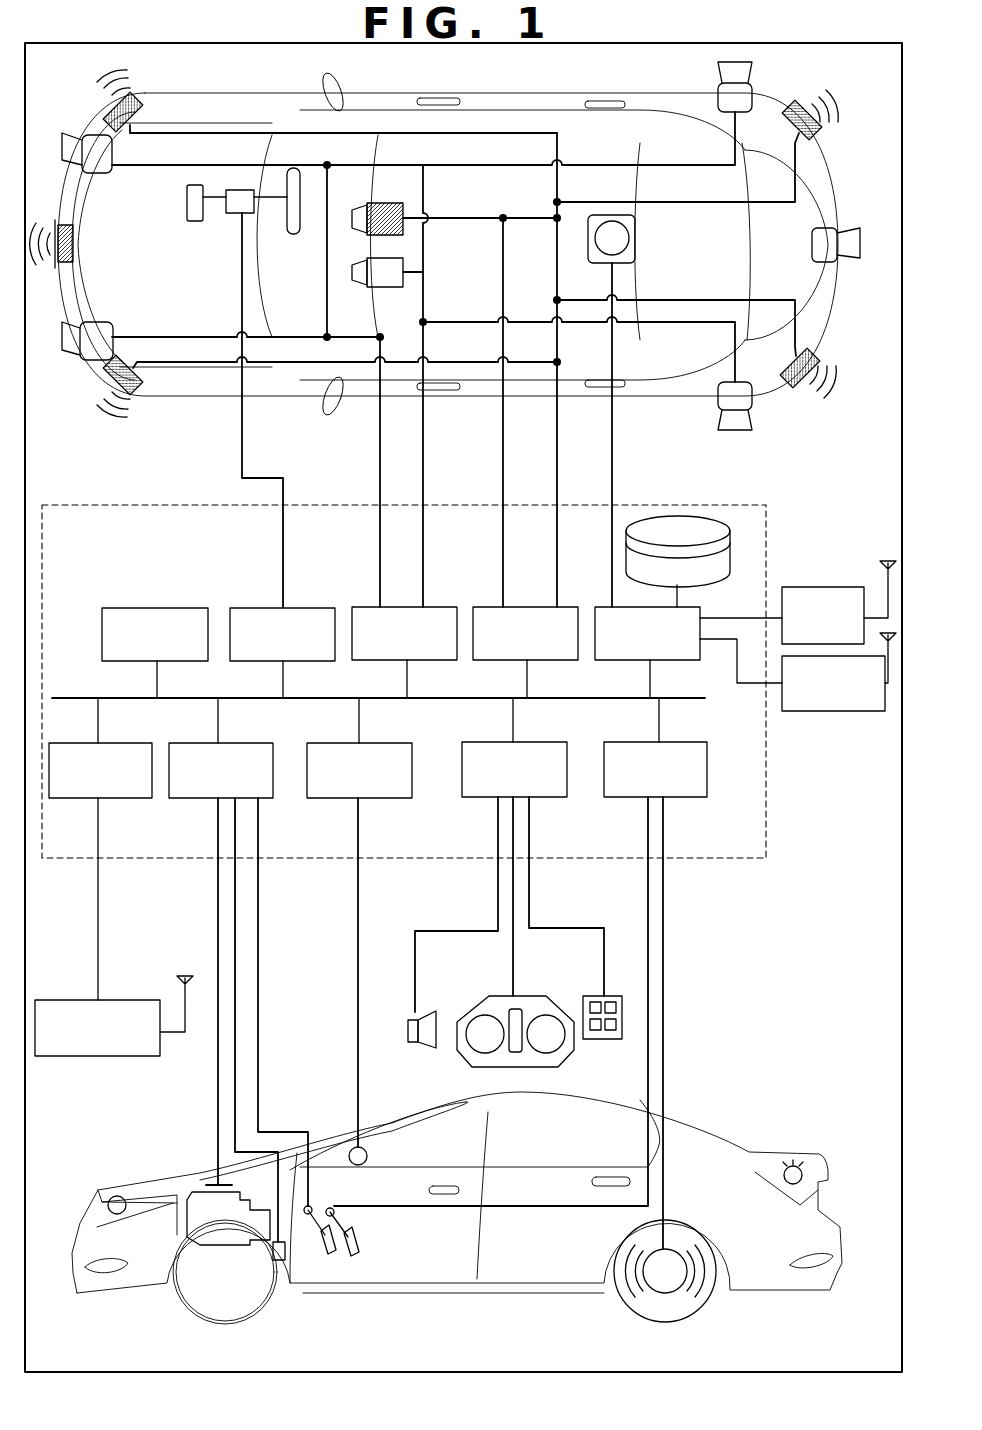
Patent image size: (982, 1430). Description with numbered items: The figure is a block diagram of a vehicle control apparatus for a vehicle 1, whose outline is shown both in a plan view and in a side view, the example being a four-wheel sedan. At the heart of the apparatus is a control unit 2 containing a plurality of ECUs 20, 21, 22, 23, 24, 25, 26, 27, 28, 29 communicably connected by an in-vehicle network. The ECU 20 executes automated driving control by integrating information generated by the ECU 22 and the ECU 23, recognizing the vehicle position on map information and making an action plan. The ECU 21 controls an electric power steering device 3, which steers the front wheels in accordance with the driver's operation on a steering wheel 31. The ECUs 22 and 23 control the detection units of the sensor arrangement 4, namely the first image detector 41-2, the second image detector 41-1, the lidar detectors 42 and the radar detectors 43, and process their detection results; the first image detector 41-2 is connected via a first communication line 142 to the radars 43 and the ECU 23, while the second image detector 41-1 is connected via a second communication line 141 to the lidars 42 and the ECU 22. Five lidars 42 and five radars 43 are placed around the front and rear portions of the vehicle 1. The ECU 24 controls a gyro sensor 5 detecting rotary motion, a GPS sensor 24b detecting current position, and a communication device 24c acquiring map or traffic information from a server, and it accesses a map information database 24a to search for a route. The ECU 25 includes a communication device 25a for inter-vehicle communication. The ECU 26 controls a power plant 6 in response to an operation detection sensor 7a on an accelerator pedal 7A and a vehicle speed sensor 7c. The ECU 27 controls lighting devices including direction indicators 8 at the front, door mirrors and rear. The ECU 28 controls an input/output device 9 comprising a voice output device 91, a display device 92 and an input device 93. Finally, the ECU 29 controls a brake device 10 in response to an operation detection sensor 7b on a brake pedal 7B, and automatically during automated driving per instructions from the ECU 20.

The vehicle 1 is at (842, 152).
The control unit 2 is at (745, 858).
The electric power steering device 3 is at (195, 221).
The steering wheel 31 is at (293, 234).
The sensor group 4 is at (84, 98).
The second image detector 41-1 is at (403, 287).
The first image detector 41-2 is at (403, 235).
The lidar detector 42 is at (110, 176).
The radar detector 43 is at (133, 102).
The gyro sensor 5 is at (635, 240).
The second communication line 141 is at (426, 185).
The first communication line 142 is at (557, 202).
The ECU 20 is at (188, 608).
The ECU 21 is at (310, 608).
The ECU 22 is at (399, 607).
The ECU 23 is at (530, 607).
The ECU 24 is at (596, 607).
The map information database 24a is at (676, 516).
The GPS sensor 24b is at (841, 587).
The communication device 24c is at (830, 711).
The ECU 25 is at (134, 798).
The communication device 25a is at (100, 1056).
The ECU 26 is at (202, 798).
The ECU 27 is at (392, 798).
The ECU 28 is at (553, 797).
The ECU 29 is at (690, 797).
The power plant 6 is at (188, 1192).
The operation detection sensor 7a is at (310, 1203).
The accelerator pedal 7A is at (334, 1254).
The operation detection sensor 7b is at (338, 1209).
The brake pedal 7B is at (359, 1245).
The vehicle speed sensor 7c is at (279, 1260).
The direction indicators 8 is at (108, 1200).
The input/output device 9 is at (445, 1068).
The voice output device 91 is at (408, 1026).
The display device 92 is at (480, 1008).
The input device 93 is at (600, 1039).
The brake device 10 is at (668, 1293).